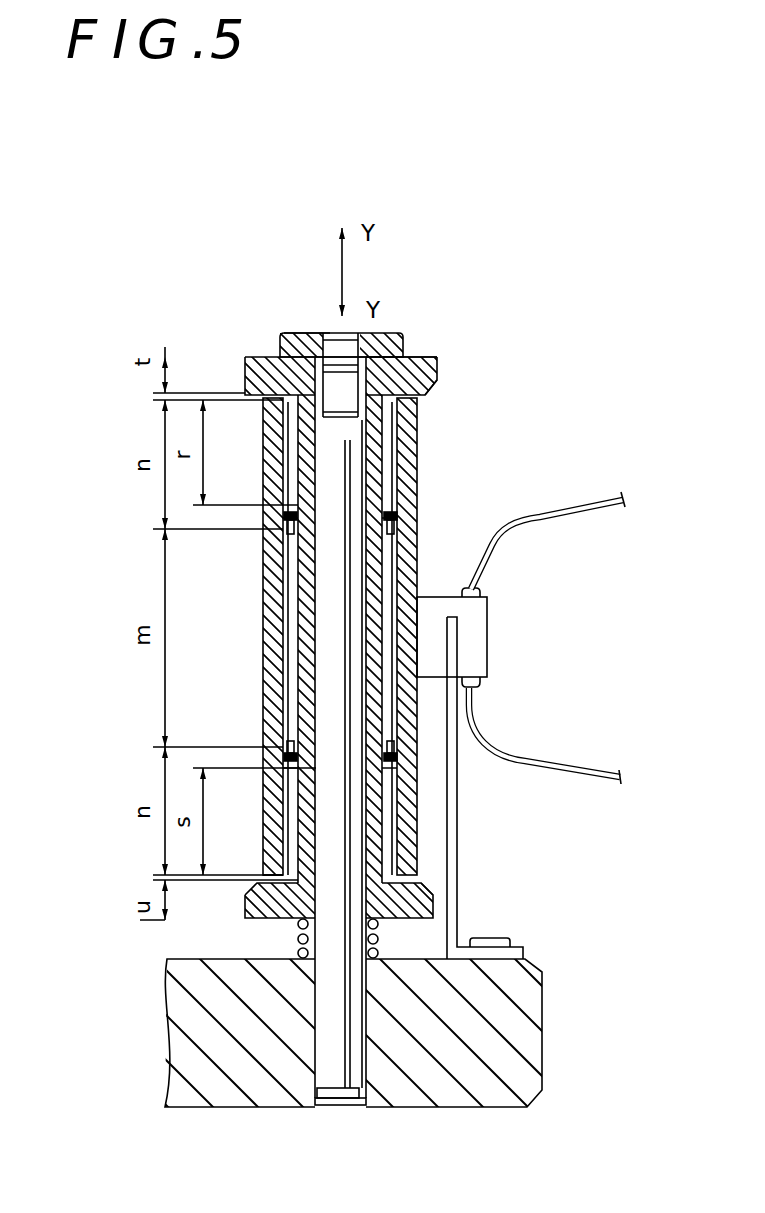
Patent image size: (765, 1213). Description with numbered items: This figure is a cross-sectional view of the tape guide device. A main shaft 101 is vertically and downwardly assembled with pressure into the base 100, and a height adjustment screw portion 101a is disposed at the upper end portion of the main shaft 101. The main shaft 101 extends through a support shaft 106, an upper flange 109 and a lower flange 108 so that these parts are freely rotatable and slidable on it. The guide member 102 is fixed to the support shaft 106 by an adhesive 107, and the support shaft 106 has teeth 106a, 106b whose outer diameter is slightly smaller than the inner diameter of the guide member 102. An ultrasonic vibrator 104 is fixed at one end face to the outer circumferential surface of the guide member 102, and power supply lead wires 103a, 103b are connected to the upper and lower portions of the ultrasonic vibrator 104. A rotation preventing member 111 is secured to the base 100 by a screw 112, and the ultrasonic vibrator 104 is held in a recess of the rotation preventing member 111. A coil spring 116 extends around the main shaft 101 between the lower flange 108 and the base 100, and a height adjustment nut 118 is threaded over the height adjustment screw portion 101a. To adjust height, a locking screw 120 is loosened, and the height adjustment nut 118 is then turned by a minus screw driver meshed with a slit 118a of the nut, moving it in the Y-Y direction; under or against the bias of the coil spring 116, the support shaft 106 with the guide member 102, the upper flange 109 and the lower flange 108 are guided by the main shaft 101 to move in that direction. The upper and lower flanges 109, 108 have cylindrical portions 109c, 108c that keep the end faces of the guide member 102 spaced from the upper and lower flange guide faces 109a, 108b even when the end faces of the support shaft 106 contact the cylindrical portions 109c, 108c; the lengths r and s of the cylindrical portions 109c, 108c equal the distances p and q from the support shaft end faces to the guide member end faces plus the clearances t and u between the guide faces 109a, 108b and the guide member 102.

The base 100 is at (192, 1108).
The main shaft 101 is at (333, 1107).
The height adjustment screw portion 101a is at (410, 388).
The guide member 102 is at (263, 654).
The power supply lead wire 103a is at (603, 497).
The power supply lead wire 103b is at (597, 769).
The ultrasonic vibrator 104 is at (487, 643).
The support shaft 106 is at (288, 580).
The tooth 106a is at (396, 522).
The tooth 106b is at (393, 770).
The adhesive 107 is at (287, 515).
The lower flange 108 is at (246, 905).
The lower flange guide face 108b is at (435, 898).
The cylindrical portion 108c is at (295, 838).
The upper flange 109 is at (405, 358).
The upper flange guide face 109a is at (428, 393).
The cylindrical portion 109c is at (296, 432).
The rotation preventing member 111 is at (457, 777).
The screw 112 is at (510, 940).
The coil spring 116 is at (298, 940).
The height adjustment nut 118 is at (373, 333).
The slit 118a is at (300, 333).
The locking screw 120 is at (342, 333).